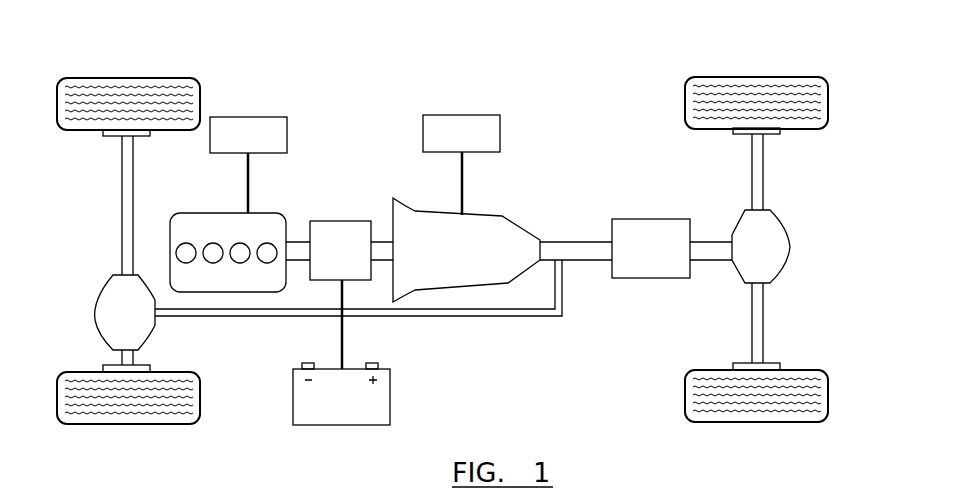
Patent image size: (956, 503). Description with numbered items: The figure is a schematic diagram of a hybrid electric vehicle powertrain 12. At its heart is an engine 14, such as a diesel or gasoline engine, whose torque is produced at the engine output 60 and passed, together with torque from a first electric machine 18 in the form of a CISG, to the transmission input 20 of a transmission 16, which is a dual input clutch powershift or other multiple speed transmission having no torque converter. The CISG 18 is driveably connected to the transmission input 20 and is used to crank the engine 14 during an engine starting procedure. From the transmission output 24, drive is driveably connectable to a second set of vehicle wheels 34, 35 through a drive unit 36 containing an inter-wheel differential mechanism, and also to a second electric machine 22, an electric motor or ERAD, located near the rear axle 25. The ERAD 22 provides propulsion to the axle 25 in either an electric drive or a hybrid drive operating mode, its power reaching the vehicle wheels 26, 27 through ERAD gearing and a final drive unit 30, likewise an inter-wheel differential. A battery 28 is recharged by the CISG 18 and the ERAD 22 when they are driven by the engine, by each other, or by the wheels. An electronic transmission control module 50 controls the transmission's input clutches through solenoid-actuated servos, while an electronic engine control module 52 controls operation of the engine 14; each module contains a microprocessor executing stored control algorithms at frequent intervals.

The HEV powertrain 12 is at (590, 64).
The engine 14 is at (200, 213).
The transmission 16 is at (500, 216).
The first electric machine 18 is at (340, 221).
The transmission input 20 is at (381, 242).
The second electric machine 22 is at (653, 219).
The transmission output 24 is at (548, 242).
The rear axle 25 is at (765, 327).
The vehicle wheel 26 is at (750, 77).
The vehicle wheel 27 is at (745, 421).
The battery 28 is at (390, 396).
The final drive unit 30 is at (790, 250).
The vehicle wheel 34 is at (128, 78).
The vehicle wheel 35 is at (120, 425).
The drive unit 36 is at (95, 317).
The transmission control module 50 is at (455, 115).
The engine control module 52 is at (238, 117).
The engine output 60 is at (298, 242).